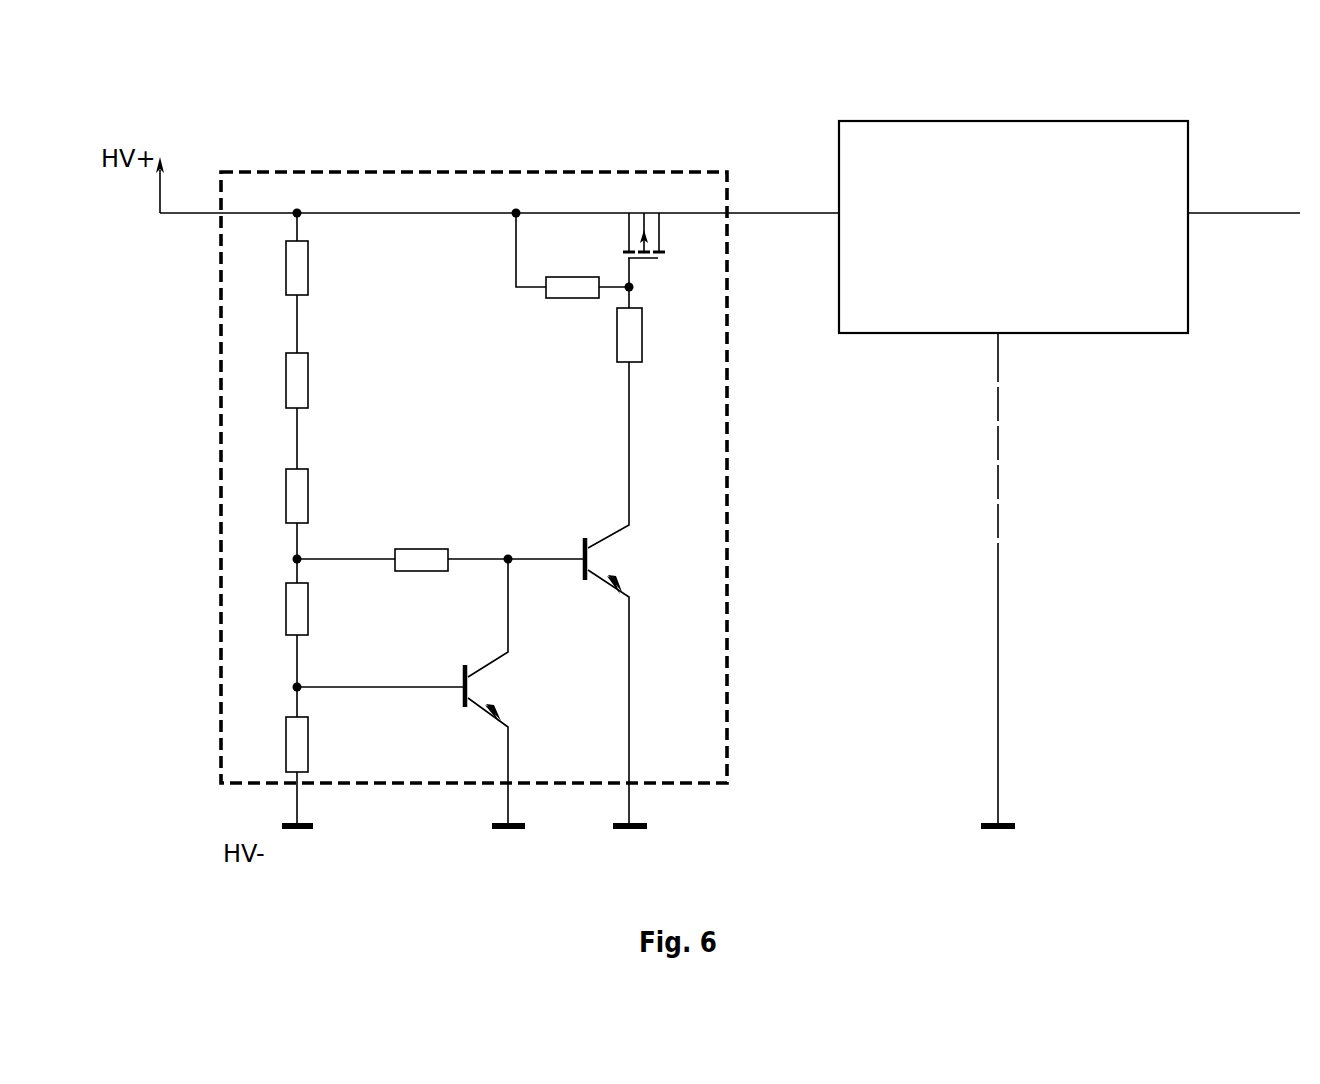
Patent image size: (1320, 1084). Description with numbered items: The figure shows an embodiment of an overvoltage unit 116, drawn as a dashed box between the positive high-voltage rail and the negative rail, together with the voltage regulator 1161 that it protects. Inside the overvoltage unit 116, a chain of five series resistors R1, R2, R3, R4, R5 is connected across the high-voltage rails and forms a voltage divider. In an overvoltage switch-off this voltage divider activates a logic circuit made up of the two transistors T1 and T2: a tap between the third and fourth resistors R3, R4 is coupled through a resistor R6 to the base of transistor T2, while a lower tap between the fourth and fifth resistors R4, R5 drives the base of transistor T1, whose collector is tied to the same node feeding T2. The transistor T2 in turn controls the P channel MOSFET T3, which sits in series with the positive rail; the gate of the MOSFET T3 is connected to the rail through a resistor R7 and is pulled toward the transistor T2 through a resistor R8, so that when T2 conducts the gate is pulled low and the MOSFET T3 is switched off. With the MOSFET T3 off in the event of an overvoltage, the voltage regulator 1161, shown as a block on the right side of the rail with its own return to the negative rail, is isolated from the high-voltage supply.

The overvoltage unit 116 is at (522, 172).
The voltage regulator 1161 is at (960, 121).
The voltage divider resistor R1 is at (309, 268).
The voltage divider resistor R2 is at (309, 380).
The voltage divider resistor R3 is at (309, 496).
The voltage divider resistor R4 is at (309, 609).
The voltage divider resistor R5 is at (309, 744).
The resistor R6 is at (421, 561).
The resistor R7 is at (572, 278).
The resistor R8 is at (640, 335).
The transistor T1 is at (478, 692).
The transistor T2 is at (599, 593).
The P channel MOSFET T3 is at (661, 250).